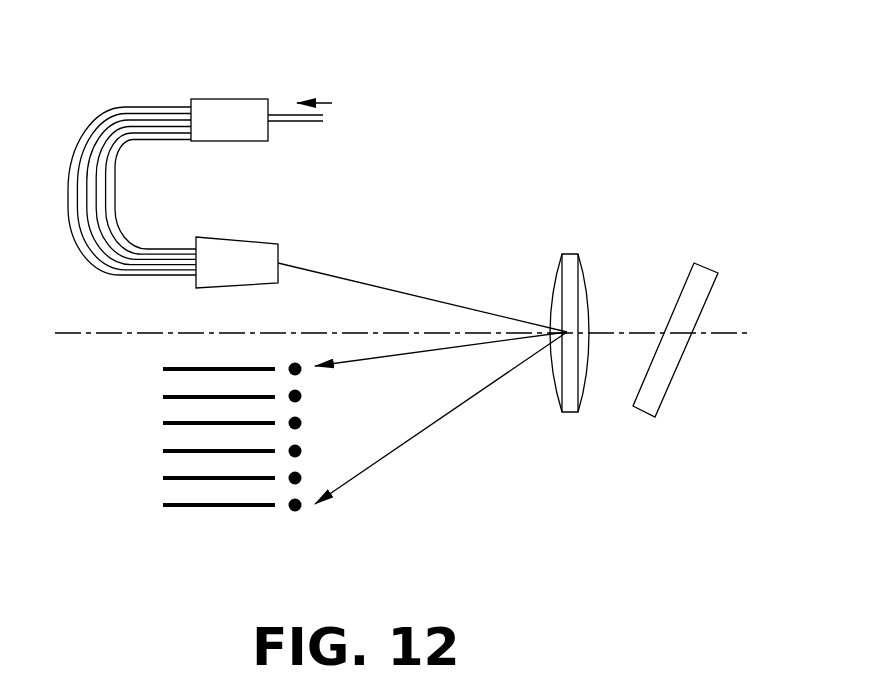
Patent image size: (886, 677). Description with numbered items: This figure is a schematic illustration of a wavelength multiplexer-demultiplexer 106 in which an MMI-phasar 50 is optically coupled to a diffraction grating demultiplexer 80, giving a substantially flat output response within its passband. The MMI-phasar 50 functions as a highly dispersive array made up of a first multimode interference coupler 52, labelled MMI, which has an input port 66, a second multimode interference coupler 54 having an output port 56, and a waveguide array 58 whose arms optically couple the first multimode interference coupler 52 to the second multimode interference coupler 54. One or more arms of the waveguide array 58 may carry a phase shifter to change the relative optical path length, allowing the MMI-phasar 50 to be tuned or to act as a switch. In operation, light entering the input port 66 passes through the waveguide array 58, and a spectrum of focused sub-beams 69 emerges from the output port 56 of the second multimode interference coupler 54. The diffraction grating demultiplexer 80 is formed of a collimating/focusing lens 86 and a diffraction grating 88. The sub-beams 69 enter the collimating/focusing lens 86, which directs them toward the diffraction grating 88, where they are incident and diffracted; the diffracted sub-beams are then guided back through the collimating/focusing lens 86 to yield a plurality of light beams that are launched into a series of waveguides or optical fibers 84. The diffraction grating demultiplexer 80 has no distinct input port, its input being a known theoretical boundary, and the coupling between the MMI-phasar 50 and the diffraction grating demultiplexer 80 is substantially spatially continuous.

The MMI-phasar 50 is at (105, 169).
The first multimode interference (MMI) coupler 52 is at (208, 113).
The second multimode interference coupler 54 is at (246, 240).
The output port 56 is at (279, 263).
The waveguide array 58 is at (73, 232).
The input port 66 is at (297, 121).
The sub-beams 69 is at (332, 275).
The diffraction grating demultiplexer 80 is at (655, 445).
The waveguides or optical fibers 84 is at (231, 533).
The collimating/focusing lens 86 is at (571, 412).
The diffraction grating 88 is at (673, 380).
The wavelength multiplexer-demultiplexer 106 is at (572, 128).
The multimode interference coupler MMI is at (238, 113).